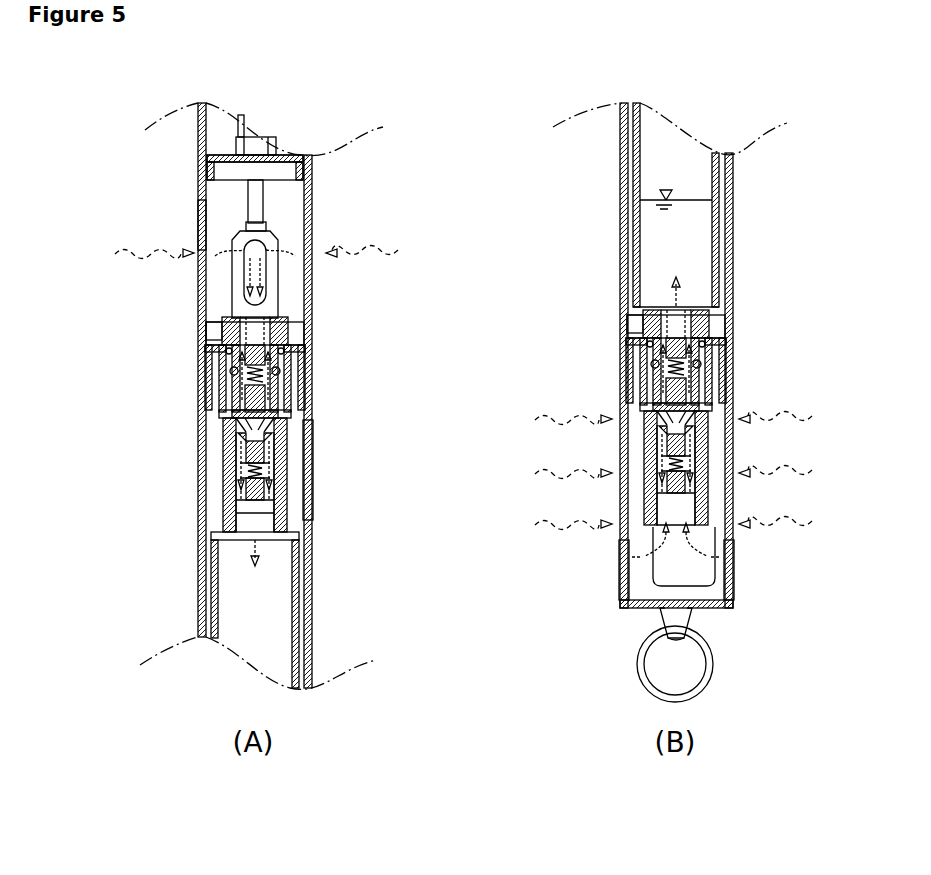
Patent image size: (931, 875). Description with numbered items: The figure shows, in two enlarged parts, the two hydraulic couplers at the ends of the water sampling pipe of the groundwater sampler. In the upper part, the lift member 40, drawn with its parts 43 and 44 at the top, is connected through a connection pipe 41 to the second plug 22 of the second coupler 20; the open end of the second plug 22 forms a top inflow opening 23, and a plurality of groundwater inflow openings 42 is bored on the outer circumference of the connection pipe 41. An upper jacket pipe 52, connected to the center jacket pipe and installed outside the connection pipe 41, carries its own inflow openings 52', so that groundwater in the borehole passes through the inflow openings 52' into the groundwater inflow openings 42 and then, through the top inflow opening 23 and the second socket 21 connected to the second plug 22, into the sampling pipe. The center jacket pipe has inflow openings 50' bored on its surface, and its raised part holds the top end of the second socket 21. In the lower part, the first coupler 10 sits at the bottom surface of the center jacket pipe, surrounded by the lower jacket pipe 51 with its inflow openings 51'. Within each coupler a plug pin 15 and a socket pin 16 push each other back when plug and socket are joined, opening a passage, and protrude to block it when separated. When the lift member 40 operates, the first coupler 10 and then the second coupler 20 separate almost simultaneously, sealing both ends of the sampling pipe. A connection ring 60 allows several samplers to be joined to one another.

The first coupler 10 is at (697, 446).
The plug pin 15 is at (243, 410).
The socket pin 16 is at (243, 426).
The second coupler 20 is at (285, 416).
The second socket 21 is at (299, 423).
The second plug 22 is at (297, 328).
The top inflow opening 23 is at (258, 325).
The lift member 40 is at (170, 173).
The connection pipe 41 is at (273, 267).
The groundwater inflow openings 42 is at (257, 292).
The nut 43 is at (247, 122).
The rod 44 is at (252, 198).
The inflow openings 50' is at (354, 470).
The lower jacket pipe 51 is at (770, 570).
The inflow openings 51' is at (577, 570).
The upper jacket pipe 52 is at (302, 232).
The inflow openings 52' is at (161, 225).
The connection ring 60 is at (712, 660).